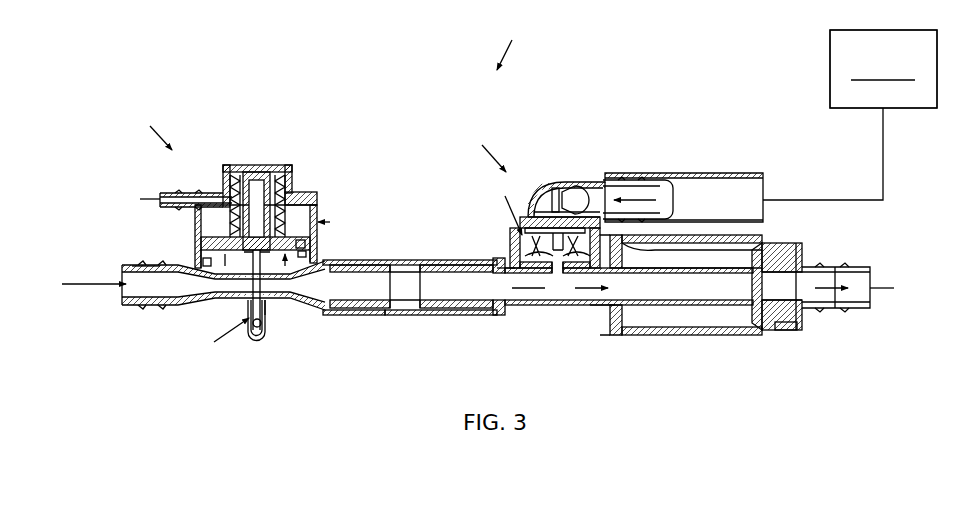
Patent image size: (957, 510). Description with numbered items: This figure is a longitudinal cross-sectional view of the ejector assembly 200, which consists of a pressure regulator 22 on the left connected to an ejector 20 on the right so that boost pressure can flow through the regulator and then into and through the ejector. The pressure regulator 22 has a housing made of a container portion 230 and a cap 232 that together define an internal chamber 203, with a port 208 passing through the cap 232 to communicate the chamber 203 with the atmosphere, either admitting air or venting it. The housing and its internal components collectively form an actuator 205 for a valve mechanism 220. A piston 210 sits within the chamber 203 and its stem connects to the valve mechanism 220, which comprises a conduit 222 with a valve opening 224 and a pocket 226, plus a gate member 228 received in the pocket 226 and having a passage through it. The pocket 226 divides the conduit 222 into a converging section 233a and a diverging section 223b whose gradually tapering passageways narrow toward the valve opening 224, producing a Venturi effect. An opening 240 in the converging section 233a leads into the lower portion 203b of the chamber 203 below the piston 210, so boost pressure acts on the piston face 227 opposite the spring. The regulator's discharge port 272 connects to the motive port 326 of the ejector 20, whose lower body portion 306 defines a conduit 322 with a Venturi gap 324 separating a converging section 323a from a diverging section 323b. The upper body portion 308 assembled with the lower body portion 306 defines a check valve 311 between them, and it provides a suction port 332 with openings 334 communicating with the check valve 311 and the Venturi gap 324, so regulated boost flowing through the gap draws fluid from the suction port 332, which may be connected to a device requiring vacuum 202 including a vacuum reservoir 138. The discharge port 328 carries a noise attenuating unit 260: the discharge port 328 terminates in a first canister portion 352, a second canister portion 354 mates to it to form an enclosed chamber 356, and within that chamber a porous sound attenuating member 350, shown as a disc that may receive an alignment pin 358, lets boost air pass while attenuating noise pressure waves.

The ejector assembly 200 is at (516, 44).
The pressure regulator 22 is at (223, 153).
The ejector 20 is at (530, 170).
The port 208 is at (188, 194).
The internal chamber 203 is at (232, 195).
The cap 232 is at (302, 194).
The container portion 230 is at (320, 208).
The actuator 205 is at (318, 222).
The piston face 227 is at (305, 244).
The lower portion of the chamber 203b is at (306, 258).
The piston 210 is at (218, 244).
The first housing end 233a is at (150, 266).
The opening 240 is at (208, 262).
The conduit 222 is at (196, 306).
The valve opening 224 is at (250, 290).
The valve mechanism 220 is at (223, 328).
The pocket 226 is at (264, 330).
The gate member 228 is at (266, 305).
The diverging section 223b is at (333, 290).
The discharge port 272 is at (385, 315).
The motive port 326 is at (430, 315).
The conduit 322 is at (490, 305).
The converging section 323a is at (497, 266).
The lower body portion 306 is at (520, 306).
The Venturi gap 324 is at (566, 284).
The diverging section 323b is at (602, 306).
The check valve 311 is at (541, 221).
The upper body portion 308 is at (590, 182).
The openings 334 is at (548, 192).
The suction port 332 is at (632, 180).
The discharge port 328 is at (705, 250).
The noise attenuating unit 260 is at (686, 336).
The first canister portion 352 is at (758, 320).
The porous sound attenuating member 350 is at (785, 243).
The alignment pin 358 is at (790, 272).
The enclosed chamber 356 is at (786, 330).
The second canister portion 354 is at (808, 320).
The vacuum reservoir 138 is at (850, 115).
The device requiring vacuum 202 is at (883, 69).